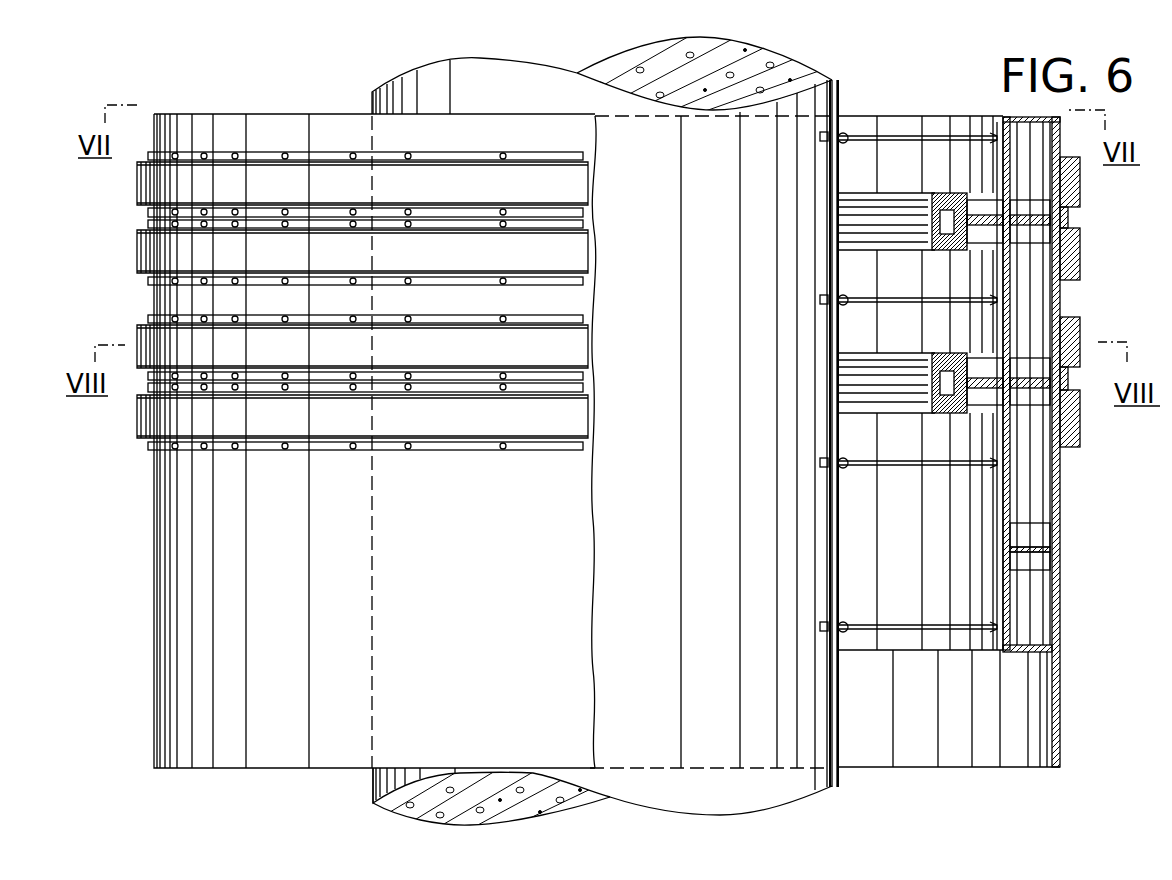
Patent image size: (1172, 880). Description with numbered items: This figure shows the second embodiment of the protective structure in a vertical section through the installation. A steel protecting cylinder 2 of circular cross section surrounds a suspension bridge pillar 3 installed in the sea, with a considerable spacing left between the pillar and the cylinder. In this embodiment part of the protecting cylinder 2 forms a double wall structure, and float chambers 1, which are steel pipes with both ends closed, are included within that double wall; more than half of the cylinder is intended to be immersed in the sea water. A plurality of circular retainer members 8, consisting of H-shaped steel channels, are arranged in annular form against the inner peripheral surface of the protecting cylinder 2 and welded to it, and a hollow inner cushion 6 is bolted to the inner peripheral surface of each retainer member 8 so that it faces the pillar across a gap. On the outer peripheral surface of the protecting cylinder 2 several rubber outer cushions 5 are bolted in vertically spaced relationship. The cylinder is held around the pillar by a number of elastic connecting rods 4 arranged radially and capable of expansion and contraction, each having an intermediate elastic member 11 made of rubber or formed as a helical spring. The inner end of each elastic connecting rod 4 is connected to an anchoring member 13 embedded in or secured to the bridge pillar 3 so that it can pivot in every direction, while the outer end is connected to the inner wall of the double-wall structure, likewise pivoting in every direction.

The float chamber 1 is at (1035, 598).
The protecting cylinder 2 is at (1057, 690).
The suspension bridge pillar 3 is at (822, 66).
The elastic connecting rod 4 is at (942, 134).
The outer cushion 5 is at (137, 245).
The inner cushion 6 is at (943, 192).
The retainer member 8 is at (990, 243).
The intermediate elastic member 11 is at (898, 136).
The anchoring member 13 is at (846, 142).